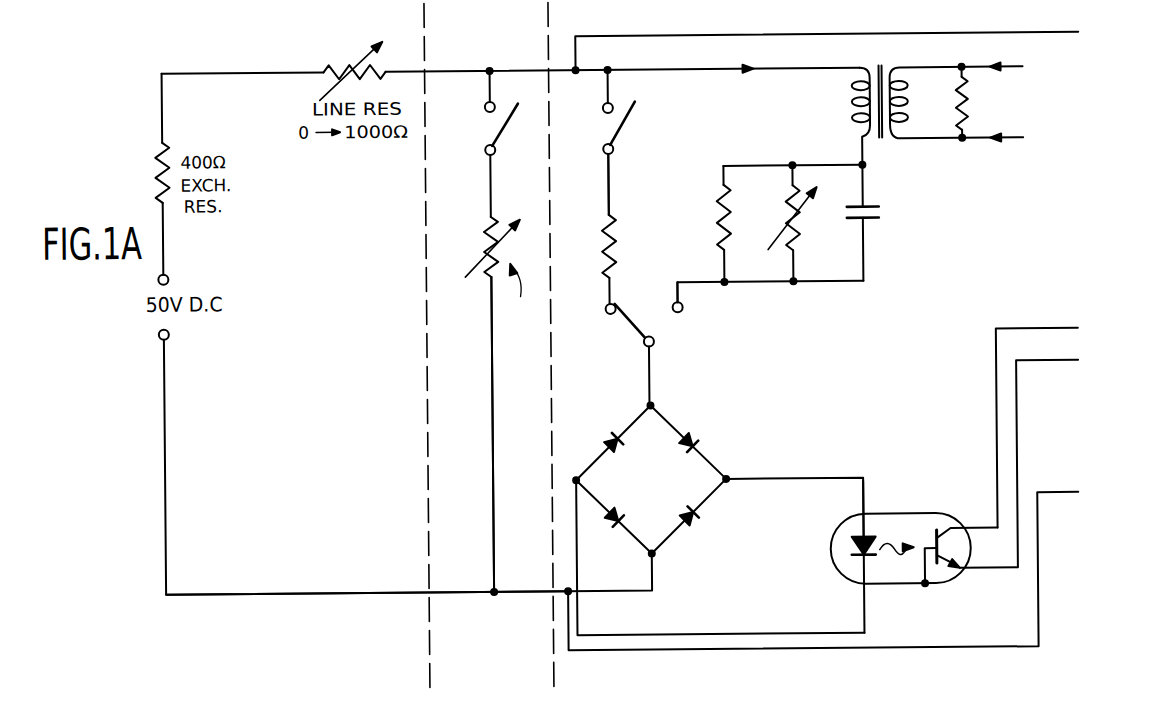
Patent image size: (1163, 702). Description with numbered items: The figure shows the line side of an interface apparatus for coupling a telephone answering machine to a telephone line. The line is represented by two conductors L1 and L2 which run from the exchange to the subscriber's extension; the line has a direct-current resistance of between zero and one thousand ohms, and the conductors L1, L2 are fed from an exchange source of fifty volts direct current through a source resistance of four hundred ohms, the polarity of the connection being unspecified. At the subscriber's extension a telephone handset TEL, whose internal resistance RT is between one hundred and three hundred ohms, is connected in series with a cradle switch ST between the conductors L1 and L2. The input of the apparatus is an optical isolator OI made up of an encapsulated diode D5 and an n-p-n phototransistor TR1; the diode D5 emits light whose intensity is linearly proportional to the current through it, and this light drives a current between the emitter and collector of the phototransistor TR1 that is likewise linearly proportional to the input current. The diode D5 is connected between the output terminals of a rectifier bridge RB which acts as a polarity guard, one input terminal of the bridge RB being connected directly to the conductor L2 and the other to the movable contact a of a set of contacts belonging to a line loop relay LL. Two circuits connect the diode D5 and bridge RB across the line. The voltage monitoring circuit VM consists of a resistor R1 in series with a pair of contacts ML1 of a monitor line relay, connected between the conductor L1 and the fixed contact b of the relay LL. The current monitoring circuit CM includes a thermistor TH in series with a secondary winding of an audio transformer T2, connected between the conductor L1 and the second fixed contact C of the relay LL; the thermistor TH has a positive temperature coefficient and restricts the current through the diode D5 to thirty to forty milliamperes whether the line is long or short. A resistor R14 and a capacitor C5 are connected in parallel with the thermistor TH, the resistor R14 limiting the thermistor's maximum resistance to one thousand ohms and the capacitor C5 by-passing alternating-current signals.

The telephone line conductor L1 is at (510, 58).
The telephone line conductor L2 is at (367, 607).
The cradle switch ST is at (499, 136).
The internal resistance of telephone handset RT is at (488, 234).
The pair of contacts ML1 is at (617, 130).
The voltage monitoring circuit VM is at (656, 184).
The resistor R1 is at (603, 236).
The resistor R14 is at (703, 224).
The thermistor TH is at (782, 223).
The current monitoring circuit CM is at (793, 208).
The capacitor C5 is at (878, 213).
The audio transformer T2 is at (1001, 101).
The line loop relay LL is at (687, 310).
The second fixed contact C is at (665, 301).
The movable contact a is at (638, 351).
The fixed contact b is at (602, 307).
The rectifier bridge RB is at (671, 412).
The optical isolator OI is at (898, 553).
The diode D5 is at (846, 553).
The phototransistor TR1 is at (923, 532).
The telephone handset TEL is at (468, 540).